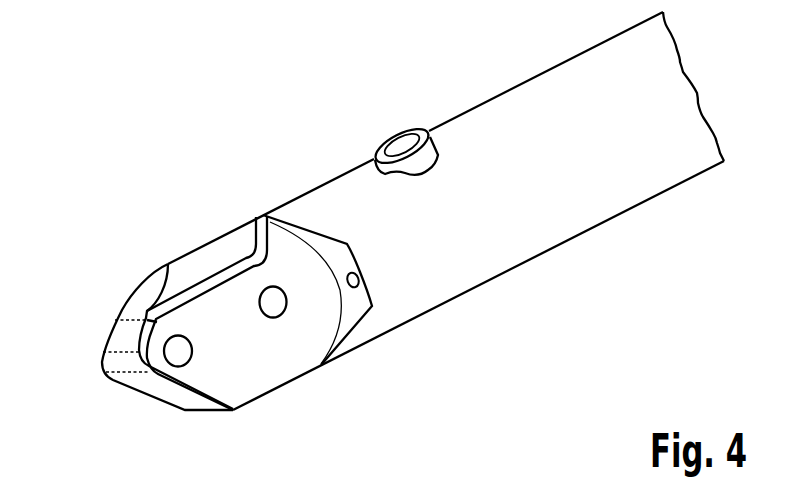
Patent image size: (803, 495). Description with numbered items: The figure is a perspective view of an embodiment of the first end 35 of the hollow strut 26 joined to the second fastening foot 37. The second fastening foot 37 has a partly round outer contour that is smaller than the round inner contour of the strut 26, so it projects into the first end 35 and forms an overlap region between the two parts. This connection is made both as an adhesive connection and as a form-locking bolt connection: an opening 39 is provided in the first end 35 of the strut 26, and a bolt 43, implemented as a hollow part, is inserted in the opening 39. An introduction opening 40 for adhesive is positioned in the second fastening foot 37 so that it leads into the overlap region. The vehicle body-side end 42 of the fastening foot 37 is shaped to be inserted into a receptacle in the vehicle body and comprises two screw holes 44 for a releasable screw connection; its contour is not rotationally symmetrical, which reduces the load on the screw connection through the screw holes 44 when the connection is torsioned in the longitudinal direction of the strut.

The strut 26 is at (624, 197).
The first end of the strut 35 is at (478, 285).
The second fastening foot 37 is at (138, 295).
The opening 39 is at (381, 128).
The introduction opening 40 is at (353, 284).
The vehicle body-side end 42 is at (96, 383).
The bolt 43 is at (403, 141).
The screw holes 44 is at (178, 356).